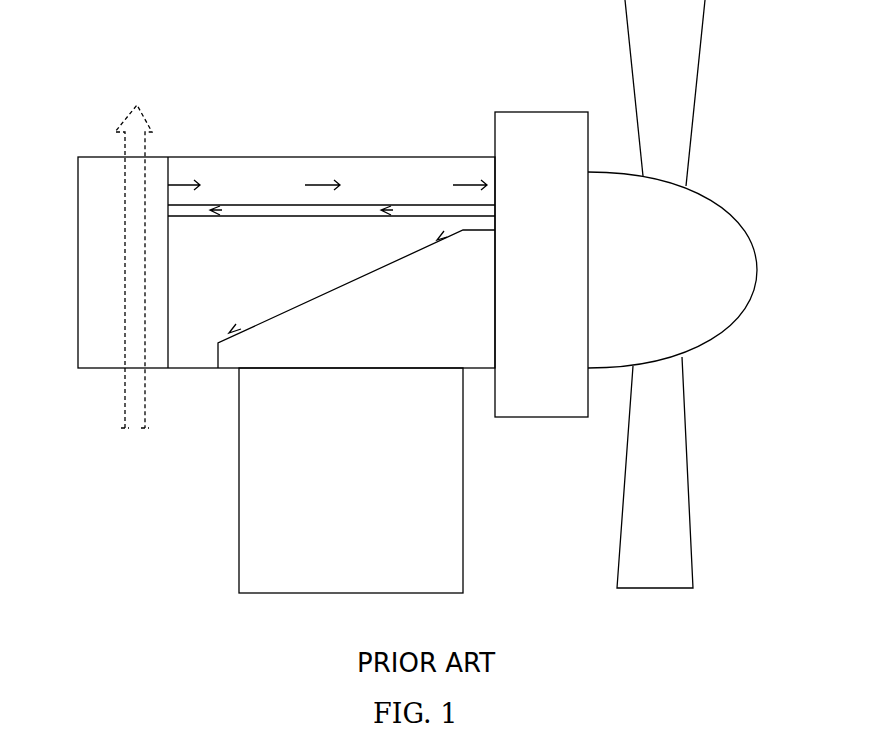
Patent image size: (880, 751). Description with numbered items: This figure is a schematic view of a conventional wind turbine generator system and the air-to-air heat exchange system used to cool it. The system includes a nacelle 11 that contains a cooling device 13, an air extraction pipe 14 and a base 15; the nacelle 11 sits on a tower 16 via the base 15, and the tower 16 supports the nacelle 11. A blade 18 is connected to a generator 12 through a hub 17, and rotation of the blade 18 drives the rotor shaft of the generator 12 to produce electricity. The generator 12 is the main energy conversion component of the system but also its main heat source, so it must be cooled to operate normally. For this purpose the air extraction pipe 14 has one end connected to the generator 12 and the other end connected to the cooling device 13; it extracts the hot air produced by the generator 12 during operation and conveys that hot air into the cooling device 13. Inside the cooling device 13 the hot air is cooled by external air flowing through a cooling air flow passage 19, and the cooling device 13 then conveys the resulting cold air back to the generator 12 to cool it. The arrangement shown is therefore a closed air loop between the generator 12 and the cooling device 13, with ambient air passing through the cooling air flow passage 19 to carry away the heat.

The nacelle 11 is at (262, 170).
The generator 12 is at (513, 113).
The cooling device 13 is at (165, 163).
The air extraction pipe 14 is at (360, 203).
The base 15 is at (318, 280).
The tower 16 is at (239, 478).
The hub 17 is at (700, 203).
The blade 18 is at (632, 57).
The cooling air flow passage 19 is at (140, 120).